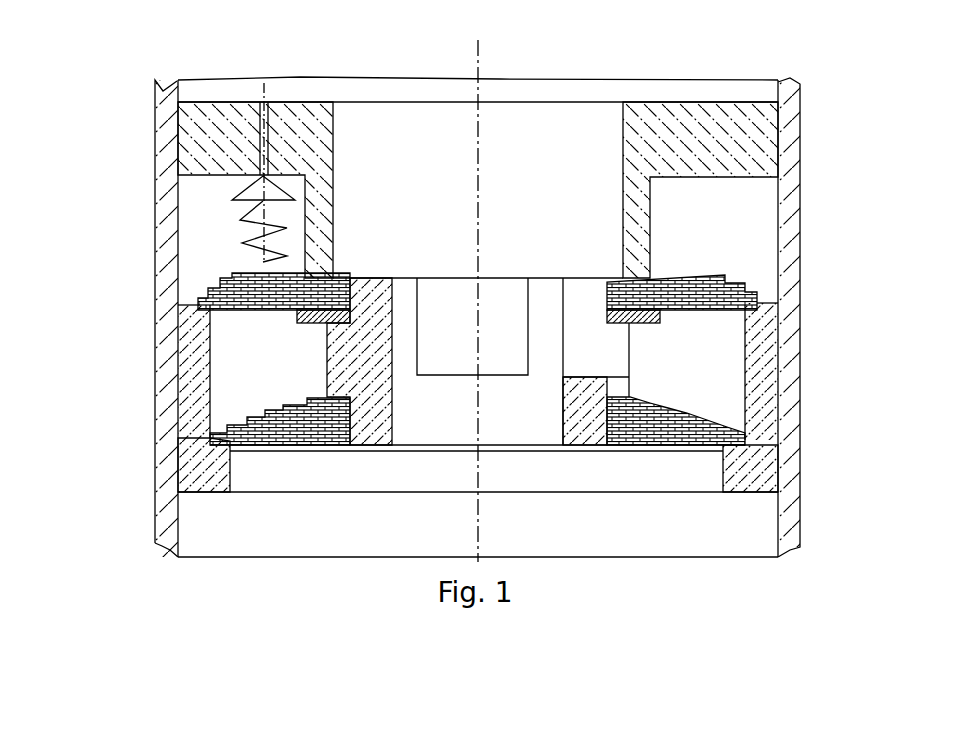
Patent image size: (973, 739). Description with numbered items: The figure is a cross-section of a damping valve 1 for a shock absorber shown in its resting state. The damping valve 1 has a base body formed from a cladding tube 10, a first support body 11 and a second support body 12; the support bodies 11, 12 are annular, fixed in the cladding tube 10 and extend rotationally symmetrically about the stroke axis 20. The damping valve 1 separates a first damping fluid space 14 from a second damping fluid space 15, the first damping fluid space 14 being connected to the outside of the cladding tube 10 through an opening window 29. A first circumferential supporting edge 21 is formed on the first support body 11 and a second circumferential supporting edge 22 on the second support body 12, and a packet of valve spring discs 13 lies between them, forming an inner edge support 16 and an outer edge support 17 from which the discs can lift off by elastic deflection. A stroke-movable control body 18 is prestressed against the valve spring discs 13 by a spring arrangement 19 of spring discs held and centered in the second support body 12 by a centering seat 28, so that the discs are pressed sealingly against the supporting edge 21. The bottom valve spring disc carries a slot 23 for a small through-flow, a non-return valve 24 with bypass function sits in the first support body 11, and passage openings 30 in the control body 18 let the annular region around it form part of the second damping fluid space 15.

The damping valve 1 is at (893, 110).
The cladding tube 10 is at (793, 160).
The first support body 11 is at (653, 196).
The second support body 12 is at (768, 405).
The valve spring discs 13 is at (738, 282).
The first damping fluid space 14 is at (195, 218).
The second damping fluid space 15 is at (420, 140).
The inner edge support 16 is at (606, 266).
The outer edge support 17 is at (200, 312).
The control body 18 is at (332, 377).
The spring arrangement 19 is at (697, 437).
The stroke axis 20 is at (480, 125).
The first circumferential supporting edge 21 is at (313, 277).
The second circumferential supporting edge 22 is at (755, 310).
The slot 23 is at (220, 307).
The non-return valve 24 is at (247, 187).
The centering seat 28 is at (200, 443).
The opening window 29 is at (788, 250).
The passage openings 30 is at (512, 347).